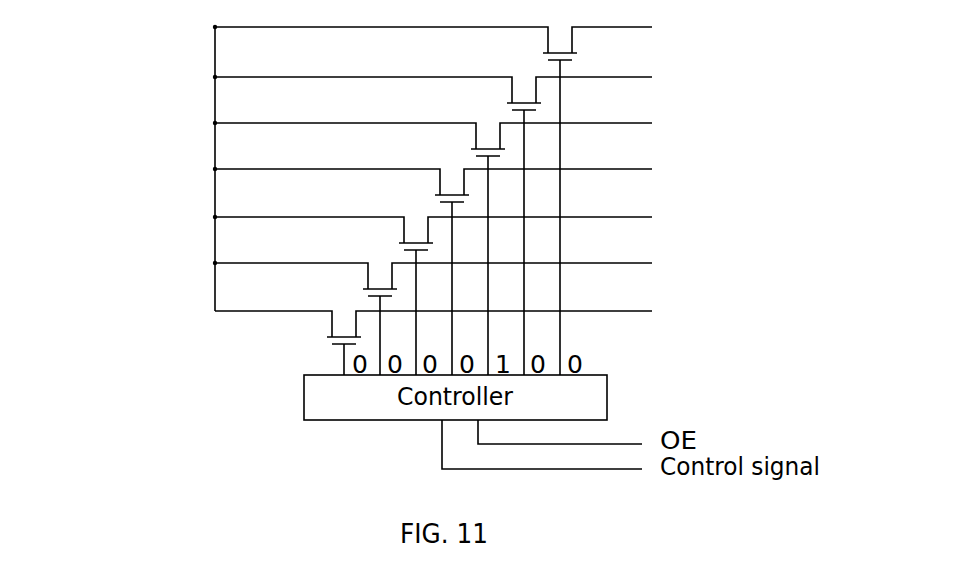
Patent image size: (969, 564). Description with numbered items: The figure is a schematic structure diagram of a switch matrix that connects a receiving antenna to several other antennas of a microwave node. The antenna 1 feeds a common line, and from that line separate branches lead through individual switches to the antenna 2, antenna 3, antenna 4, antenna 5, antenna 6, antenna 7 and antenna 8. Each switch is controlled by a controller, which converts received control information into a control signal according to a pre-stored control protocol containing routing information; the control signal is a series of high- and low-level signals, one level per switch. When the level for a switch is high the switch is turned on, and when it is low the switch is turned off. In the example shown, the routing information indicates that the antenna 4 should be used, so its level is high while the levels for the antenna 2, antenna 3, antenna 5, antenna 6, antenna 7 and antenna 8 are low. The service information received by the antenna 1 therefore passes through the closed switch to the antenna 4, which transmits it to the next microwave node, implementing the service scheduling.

The antenna 1 is at (215, 27).
The antenna 2 is at (499, 196).
The antenna 3 is at (499, 221).
The antenna 4 is at (499, 244).
The antenna 5 is at (499, 267).
The antenna 6 is at (499, 291).
The antenna 7 is at (499, 314).
The antenna 8 is at (499, 338).